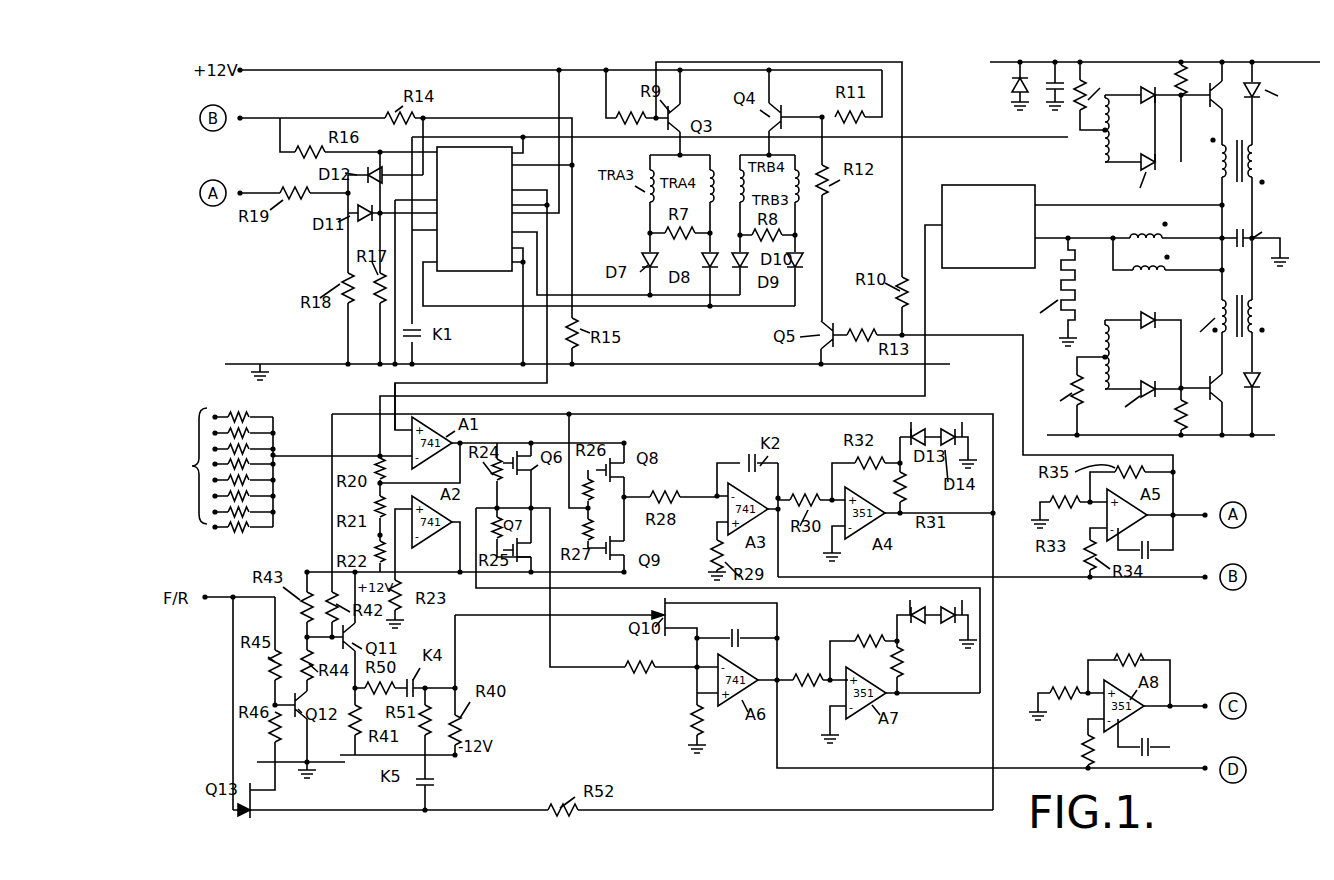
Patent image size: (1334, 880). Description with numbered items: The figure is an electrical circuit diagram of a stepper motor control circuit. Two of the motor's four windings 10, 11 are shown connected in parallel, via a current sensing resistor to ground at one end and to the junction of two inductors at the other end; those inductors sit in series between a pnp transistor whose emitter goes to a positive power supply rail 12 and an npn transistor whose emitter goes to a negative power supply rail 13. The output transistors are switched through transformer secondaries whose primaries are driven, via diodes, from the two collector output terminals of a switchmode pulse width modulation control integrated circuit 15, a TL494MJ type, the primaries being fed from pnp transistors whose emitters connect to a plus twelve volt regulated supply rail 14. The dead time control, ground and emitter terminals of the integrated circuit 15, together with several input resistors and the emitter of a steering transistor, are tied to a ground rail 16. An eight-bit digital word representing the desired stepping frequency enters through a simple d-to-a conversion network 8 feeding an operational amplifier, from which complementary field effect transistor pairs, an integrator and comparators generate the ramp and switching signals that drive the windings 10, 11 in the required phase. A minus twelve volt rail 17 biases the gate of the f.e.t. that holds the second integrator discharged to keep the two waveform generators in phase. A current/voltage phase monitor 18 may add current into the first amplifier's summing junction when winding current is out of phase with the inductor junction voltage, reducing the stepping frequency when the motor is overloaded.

The d-to-a conversion network 8 is at (205, 470).
The stepper motor winding 10 is at (1128, 220).
The stepper motor winding 11 is at (1167, 254).
The positive power supply rail 12 is at (1105, 66).
The negative power supply rail 13 is at (1135, 437).
The +12 V regulated supply rail 14 is at (577, 70).
The switchmode pulse width modulation control integrated circuit 15 is at (466, 276).
The ground rail 16 is at (737, 367).
The -12 V rail 17 is at (458, 758).
The current/voltage phase monitor 18 is at (948, 192).